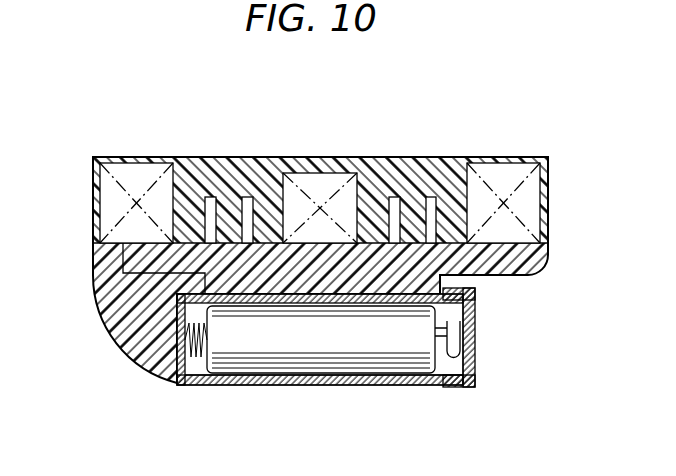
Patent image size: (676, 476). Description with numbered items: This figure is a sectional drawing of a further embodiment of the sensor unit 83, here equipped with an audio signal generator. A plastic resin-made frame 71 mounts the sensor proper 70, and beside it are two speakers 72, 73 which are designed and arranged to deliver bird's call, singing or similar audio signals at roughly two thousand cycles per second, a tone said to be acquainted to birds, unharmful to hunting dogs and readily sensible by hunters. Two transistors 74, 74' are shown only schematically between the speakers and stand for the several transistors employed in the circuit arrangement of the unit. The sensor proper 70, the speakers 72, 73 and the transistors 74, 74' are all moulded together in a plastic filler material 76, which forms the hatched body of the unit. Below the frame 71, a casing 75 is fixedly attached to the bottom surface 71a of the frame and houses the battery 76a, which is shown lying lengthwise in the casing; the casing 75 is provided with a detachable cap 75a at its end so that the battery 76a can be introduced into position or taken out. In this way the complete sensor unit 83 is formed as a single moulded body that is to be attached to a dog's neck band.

The sensor unit 83 is at (457, 145).
The plastic filler material 76 is at (418, 177).
The frame 71 is at (110, 262).
The speaker 72 is at (136, 168).
The sensor proper 70 is at (323, 176).
The speaker 73 is at (521, 176).
The transistor 74 is at (295, 176).
The transistor 74' is at (339, 175).
The casing 75 is at (205, 386).
The detachable cap 75a is at (475, 365).
The battery 76a is at (332, 355).
The bottom surface of frame 71a is at (263, 303).